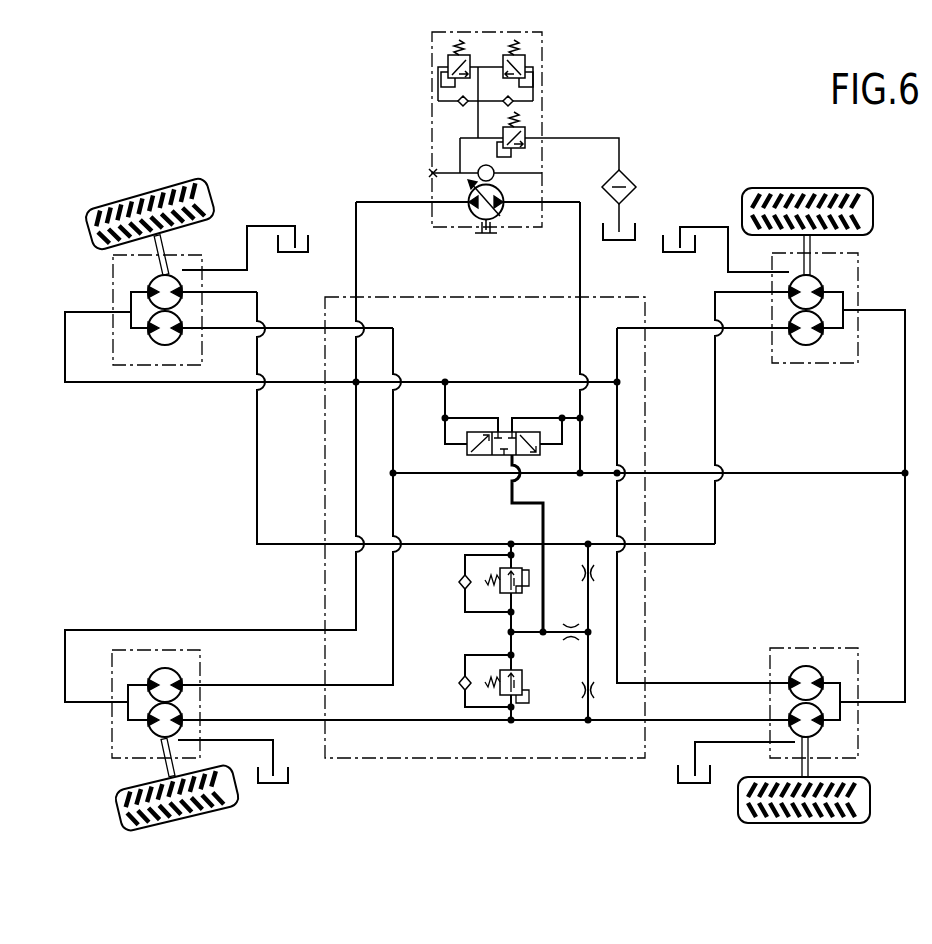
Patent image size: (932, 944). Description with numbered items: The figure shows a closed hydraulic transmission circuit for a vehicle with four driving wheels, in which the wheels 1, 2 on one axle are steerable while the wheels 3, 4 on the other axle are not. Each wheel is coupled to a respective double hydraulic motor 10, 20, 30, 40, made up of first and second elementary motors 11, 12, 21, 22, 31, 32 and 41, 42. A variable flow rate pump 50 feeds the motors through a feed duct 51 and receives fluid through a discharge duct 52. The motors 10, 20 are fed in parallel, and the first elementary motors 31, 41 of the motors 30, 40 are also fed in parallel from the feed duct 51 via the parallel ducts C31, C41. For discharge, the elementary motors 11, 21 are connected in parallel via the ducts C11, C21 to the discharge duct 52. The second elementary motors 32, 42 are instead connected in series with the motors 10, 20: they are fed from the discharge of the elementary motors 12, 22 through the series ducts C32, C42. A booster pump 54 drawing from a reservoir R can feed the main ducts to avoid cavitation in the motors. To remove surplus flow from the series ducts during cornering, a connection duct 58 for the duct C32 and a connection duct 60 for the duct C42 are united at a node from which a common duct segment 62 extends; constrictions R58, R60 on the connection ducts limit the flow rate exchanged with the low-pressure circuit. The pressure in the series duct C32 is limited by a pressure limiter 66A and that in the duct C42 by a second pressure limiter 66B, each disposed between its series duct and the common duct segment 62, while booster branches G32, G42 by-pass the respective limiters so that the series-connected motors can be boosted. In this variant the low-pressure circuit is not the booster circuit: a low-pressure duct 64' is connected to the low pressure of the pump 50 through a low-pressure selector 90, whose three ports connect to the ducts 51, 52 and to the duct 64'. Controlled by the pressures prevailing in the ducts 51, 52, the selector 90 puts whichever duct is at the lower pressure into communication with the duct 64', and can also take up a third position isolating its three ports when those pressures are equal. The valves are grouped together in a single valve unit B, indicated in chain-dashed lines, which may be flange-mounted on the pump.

The steerable driving wheel 1 is at (143, 191).
The steerable driving wheel 2 is at (197, 815).
The non-steerable driving wheel 3 is at (805, 188).
The non-steerable driving wheel 4 is at (871, 800).
The hydraulic motor 10 is at (148, 319).
The first elementary motor 11 is at (165, 345).
The second elementary motor 12 is at (168, 280).
The hydraulic motor 20 is at (133, 698).
The first elementary motor 21 is at (165, 670).
The second elementary motor 22 is at (158, 738).
The hydraulic motor 30 is at (818, 324).
The first elementary motor 31 is at (807, 345).
The second elementary motor 32 is at (798, 298).
The hydraulic motor 40 is at (819, 686).
The first elementary motor 41 is at (810, 672).
The second elementary motor 42 is at (812, 730).
The variable flow rate pump 50 is at (495, 220).
The feed duct 51 is at (472, 152).
The discharge duct 52 is at (583, 270).
The booster pump 54 is at (493, 169).
The connection duct 58 is at (590, 600).
The connection duct 60 is at (590, 665).
The common duct segment 62 is at (571, 640).
The low-pressure duct 64' is at (552, 543).
The pressure limiter 66A is at (489, 562).
The pressure limiter 66B is at (528, 682).
The low-pressure selector 90 is at (486, 456).
The valve unit B is at (485, 553).
The reservoir R is at (637, 230).
The discharge duct C11 is at (295, 328).
The discharge duct C21 is at (255, 685).
The parallel duct C31 is at (683, 328).
The parallel duct C41 is at (733, 683).
The series duct C32 is at (440, 544).
The series duct C42 is at (440, 722).
The booster branch G32 is at (465, 600).
The booster branch G42 is at (465, 658).
The constriction R58 is at (595, 575).
The constriction R60 is at (594, 692).